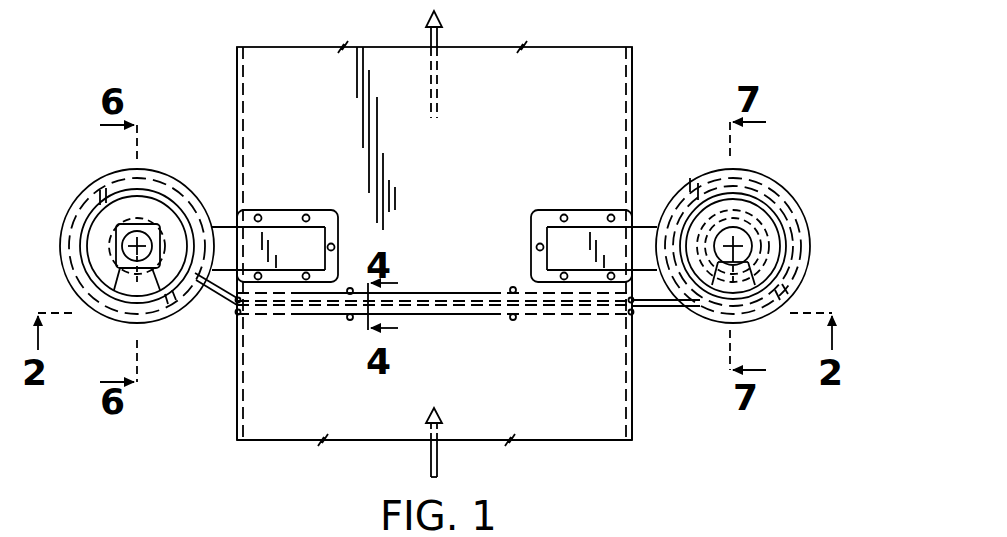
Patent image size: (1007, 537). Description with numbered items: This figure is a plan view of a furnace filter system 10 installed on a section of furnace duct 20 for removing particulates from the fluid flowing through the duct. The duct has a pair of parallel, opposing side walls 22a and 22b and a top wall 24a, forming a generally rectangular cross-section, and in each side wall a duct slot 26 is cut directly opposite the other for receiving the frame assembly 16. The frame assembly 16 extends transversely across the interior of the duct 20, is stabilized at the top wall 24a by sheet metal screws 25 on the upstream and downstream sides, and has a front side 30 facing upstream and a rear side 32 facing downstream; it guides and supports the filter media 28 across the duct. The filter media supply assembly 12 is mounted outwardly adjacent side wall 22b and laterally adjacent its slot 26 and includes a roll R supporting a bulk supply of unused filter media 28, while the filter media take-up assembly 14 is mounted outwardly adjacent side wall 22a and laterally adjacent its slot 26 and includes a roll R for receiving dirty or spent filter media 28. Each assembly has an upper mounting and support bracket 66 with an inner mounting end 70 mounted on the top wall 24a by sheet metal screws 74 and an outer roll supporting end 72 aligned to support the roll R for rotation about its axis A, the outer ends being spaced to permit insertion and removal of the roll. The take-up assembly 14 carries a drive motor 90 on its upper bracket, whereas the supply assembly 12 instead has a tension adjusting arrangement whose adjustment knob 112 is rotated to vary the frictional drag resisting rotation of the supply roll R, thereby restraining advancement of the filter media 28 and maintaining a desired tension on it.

The furnace filter system 10 is at (680, 43).
The filter media supply assembly 12 is at (773, 168).
The filter media take-up assembly 14 is at (84, 166).
The frame assembly 16 is at (549, 318).
The furnace duct 20 is at (235, 422).
The side wall 22a is at (237, 383).
The side wall 22b is at (636, 406).
The top wall 24a is at (572, 423).
The sheet metal screws 25 is at (347, 293).
The duct slot 26 is at (235, 312).
The filter media 28 is at (657, 306).
The front side 30 is at (433, 319).
The rear side 32 is at (432, 289).
The upper mounting and support bracket 66 is at (73, 200).
The inner mounting end 70 is at (285, 232).
The outer roll supporting end 72 is at (156, 175).
The sheet metal screws 74 is at (331, 243).
The drive motor 90 is at (130, 254).
The adjustment knob 112 is at (739, 259).
The axis A is at (116, 268).
The roll R is at (133, 279).